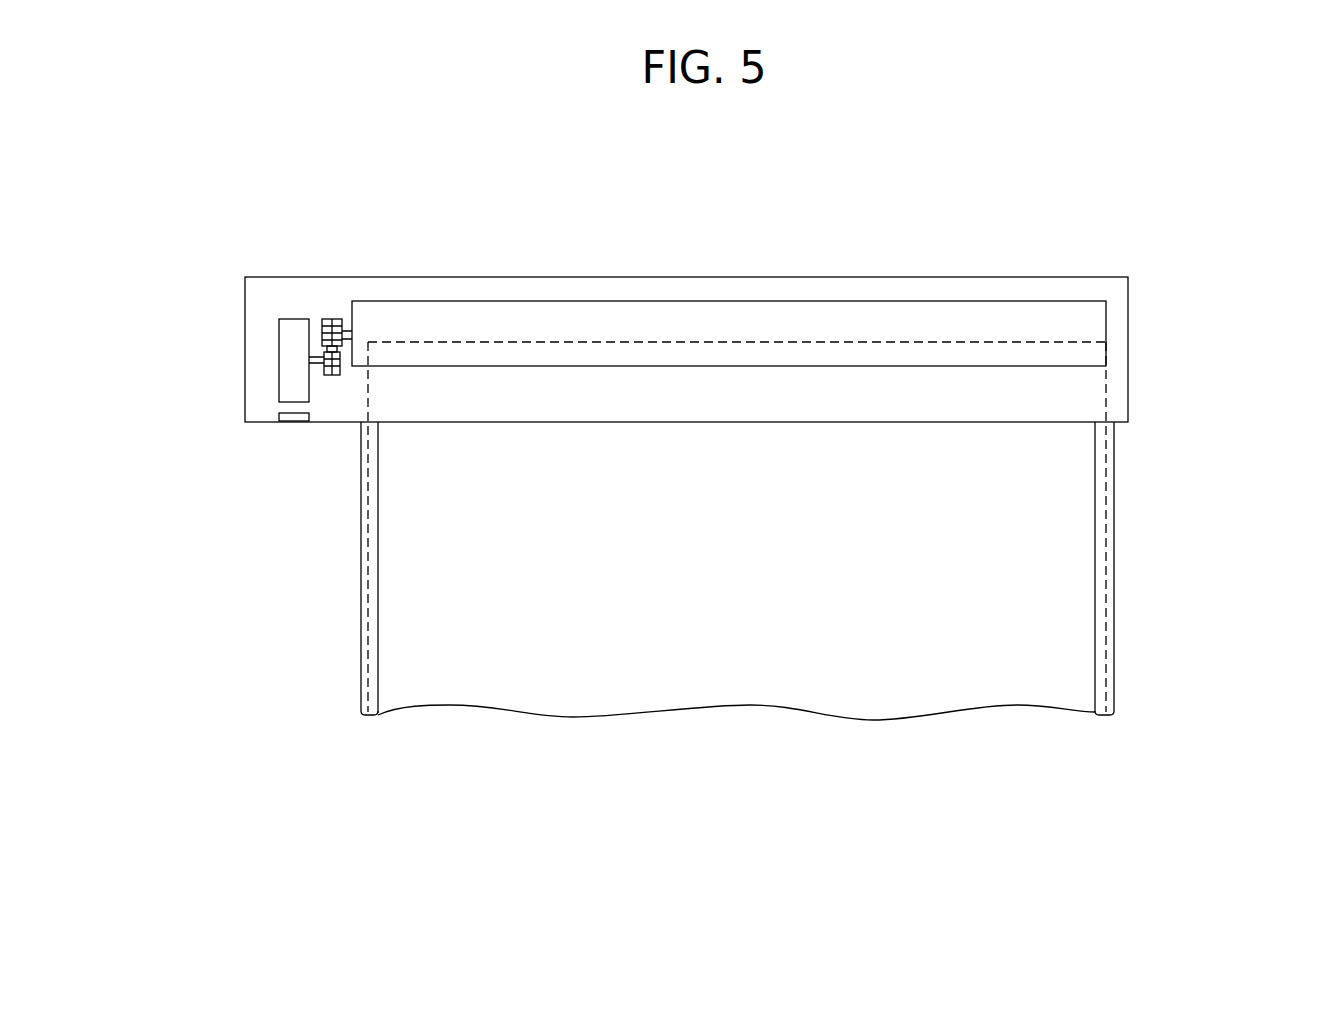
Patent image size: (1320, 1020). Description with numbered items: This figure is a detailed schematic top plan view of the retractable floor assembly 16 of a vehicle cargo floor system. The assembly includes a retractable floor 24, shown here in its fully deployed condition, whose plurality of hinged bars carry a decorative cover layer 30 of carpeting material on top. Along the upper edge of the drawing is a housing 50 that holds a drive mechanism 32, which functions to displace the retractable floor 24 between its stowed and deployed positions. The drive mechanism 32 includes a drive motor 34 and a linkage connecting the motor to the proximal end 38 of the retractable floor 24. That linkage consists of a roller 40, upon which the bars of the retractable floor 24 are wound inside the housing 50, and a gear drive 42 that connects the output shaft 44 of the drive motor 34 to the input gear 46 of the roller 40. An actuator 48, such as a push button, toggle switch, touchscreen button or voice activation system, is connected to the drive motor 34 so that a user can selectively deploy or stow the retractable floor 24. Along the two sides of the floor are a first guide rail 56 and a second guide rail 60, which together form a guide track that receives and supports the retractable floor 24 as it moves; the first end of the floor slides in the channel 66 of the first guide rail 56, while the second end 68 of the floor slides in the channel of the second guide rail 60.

The retractable floor assembly 16 is at (985, 221).
The retractable floor 24 is at (537, 712).
The decorative cover layer 30 is at (792, 598).
The drive mechanism 32 is at (217, 322).
The drive motor 34 is at (290, 325).
The proximal end 38 is at (357, 332).
The roller 40 is at (1058, 337).
The gear drive 42 is at (331, 375).
The output shaft 44 is at (316, 357).
The input gear 46 is at (333, 320).
The actuator 48 is at (290, 418).
The housing 50 is at (748, 277).
The first guide rail 56 is at (361, 583).
The second guide rail 60 is at (1114, 650).
The channel 66 is at (368, 677).
The second end 68 is at (1105, 465).